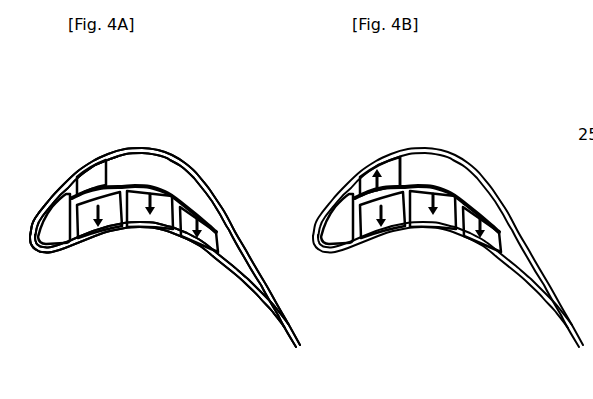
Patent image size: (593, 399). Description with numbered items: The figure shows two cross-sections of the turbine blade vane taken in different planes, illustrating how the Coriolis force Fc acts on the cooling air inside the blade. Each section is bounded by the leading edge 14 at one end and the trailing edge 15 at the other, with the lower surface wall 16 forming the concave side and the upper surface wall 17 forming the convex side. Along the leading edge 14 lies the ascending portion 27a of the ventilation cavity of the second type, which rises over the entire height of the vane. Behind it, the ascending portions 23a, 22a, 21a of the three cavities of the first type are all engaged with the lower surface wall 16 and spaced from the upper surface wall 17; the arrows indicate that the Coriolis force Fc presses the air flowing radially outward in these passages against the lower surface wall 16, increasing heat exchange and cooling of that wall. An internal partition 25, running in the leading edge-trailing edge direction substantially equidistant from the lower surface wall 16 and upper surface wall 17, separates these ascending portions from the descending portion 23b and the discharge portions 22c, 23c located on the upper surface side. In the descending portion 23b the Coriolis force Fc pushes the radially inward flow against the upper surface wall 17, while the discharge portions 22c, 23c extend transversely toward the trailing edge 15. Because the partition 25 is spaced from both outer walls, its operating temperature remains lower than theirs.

In FIG. 4A, the leading edge 14 is at (37, 218).
In FIG. 4A, the trailing edge 15 is at (188, 247).
In FIG. 4A, the lower surface wall 16 is at (144, 251).
In FIG. 4B, the lower surface wall 16 is at (427, 251).
In FIG. 4A, the upper surface wall 17 is at (165, 222).
In FIG. 4B, the upper surface wall 17 is at (448, 222).
In FIG. 4A, the ascending portion 21a is at (206, 261).
In FIG. 4B, the ascending portion 21a is at (491, 260).
In FIG. 4A, the ascending portion 22a is at (158, 241).
In FIG. 4B, the ascending portion 22a is at (436, 241).
In FIG. 4B, the discharge portion 22c is at (529, 195).
In FIG. 4A, the ascending portion 23a is at (96, 241).
In FIG. 4B, the ascending portion 23a is at (380, 241).
In FIG. 4B, the descending portion 23b is at (369, 155).
In FIG. 4A, the discharge portion 23c is at (221, 190).
In FIG. 4A, the internal partition 25 is at (138, 159).
In FIG. 4B, the internal partition 25 is at (435, 154).
In FIG. 4A, the ascending portion 27a is at (52, 254).
In FIG. 4B, the ascending portion 27a is at (331, 252).
In FIG. 4A, the Coriolis force Fc is at (81, 151).
In FIG. 4B, the Coriolis force Fc is at (481, 165).